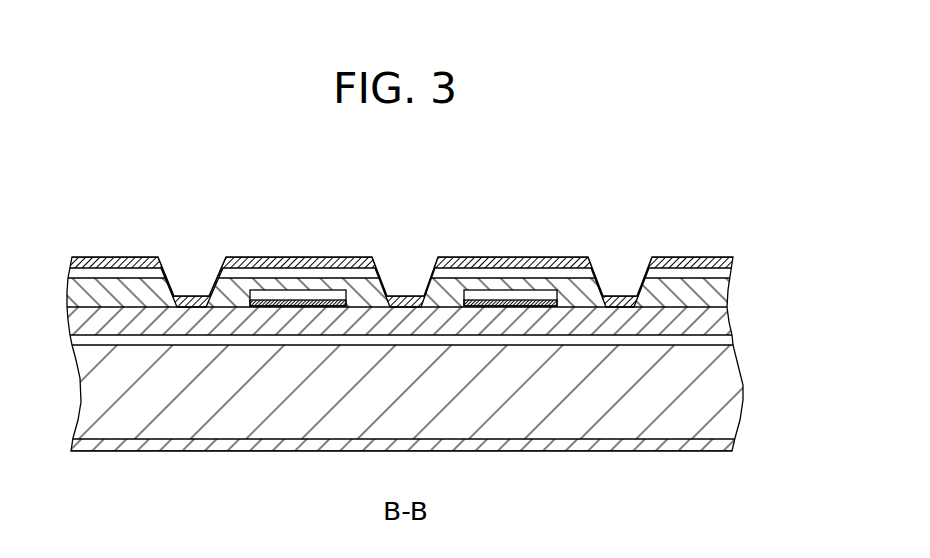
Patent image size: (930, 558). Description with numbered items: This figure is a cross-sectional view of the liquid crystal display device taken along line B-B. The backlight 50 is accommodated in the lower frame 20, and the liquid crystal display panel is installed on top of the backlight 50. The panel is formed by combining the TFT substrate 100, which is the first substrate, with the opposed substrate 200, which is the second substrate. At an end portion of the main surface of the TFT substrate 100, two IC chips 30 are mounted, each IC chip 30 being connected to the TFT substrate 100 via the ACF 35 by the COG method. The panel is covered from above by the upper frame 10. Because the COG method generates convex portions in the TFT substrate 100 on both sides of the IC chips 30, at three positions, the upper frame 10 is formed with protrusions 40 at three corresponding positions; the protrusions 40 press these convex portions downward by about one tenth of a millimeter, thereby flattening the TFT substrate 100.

The upper frame 10 is at (666, 258).
The protrusions 40 is at (175, 277).
The TFT substrate 100 is at (411, 320).
The opposed substrate 200 is at (450, 283).
The IC chip 30 is at (517, 291).
The ACF 35 is at (558, 302).
The backlight 50 is at (510, 422).
The lower frame 20 is at (577, 448).